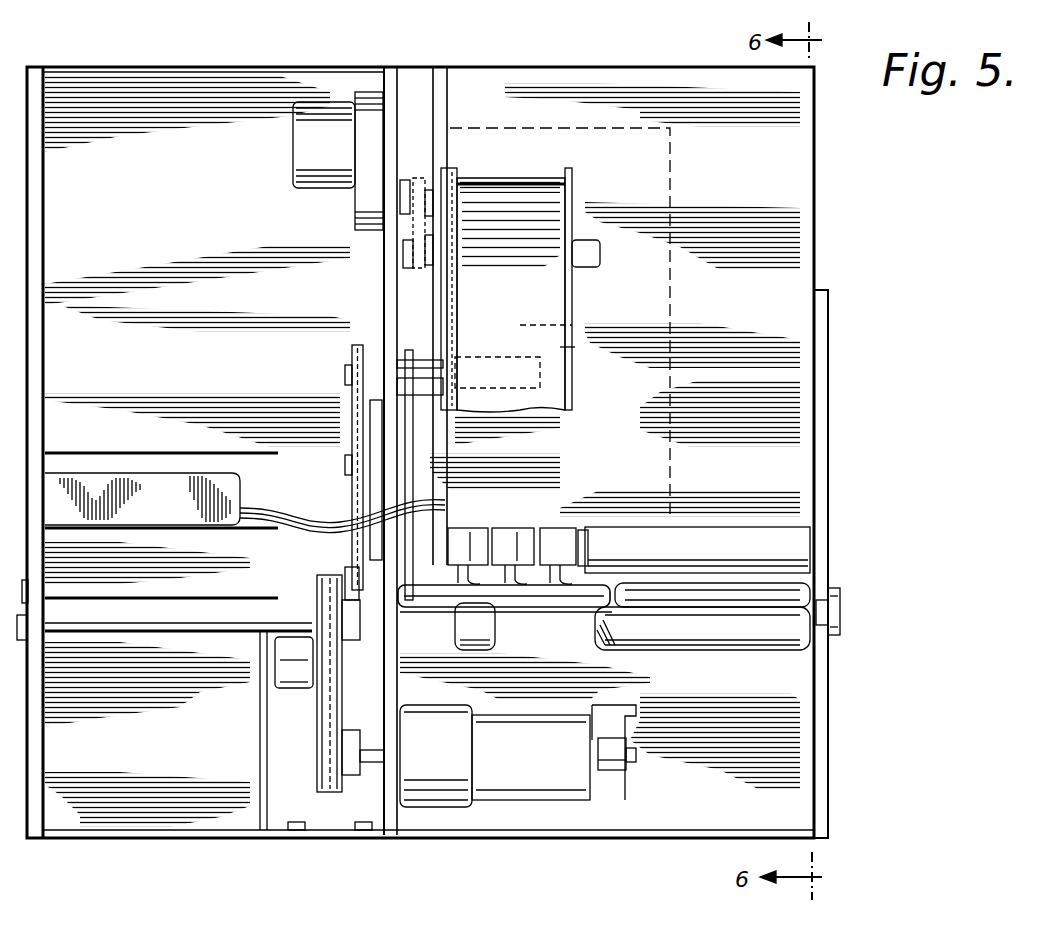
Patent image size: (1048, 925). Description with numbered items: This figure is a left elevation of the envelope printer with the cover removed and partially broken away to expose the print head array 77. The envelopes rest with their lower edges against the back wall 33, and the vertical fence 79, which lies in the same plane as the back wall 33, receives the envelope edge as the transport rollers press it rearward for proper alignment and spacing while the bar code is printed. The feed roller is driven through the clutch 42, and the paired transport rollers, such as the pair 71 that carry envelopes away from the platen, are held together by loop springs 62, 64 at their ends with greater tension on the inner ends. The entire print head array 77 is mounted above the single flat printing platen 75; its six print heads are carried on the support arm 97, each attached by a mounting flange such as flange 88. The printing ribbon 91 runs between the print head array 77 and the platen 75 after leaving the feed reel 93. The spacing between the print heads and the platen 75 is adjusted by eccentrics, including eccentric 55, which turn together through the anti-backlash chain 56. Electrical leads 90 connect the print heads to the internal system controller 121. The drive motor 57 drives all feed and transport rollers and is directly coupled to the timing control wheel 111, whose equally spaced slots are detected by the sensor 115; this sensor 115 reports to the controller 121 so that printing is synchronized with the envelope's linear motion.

The back wall 33 is at (443, 89).
The feed reel 93 is at (572, 298).
The eccentric 55 is at (572, 347).
The printing ribbon 91 is at (572, 410).
The anti-backlash chain 56 is at (345, 418).
The vertical fence 79 is at (447, 437).
The electrical leads 90 is at (325, 506).
The internal system controller 121 is at (193, 507).
The print head array 77 is at (540, 530).
The mounting flange 88 is at (545, 555).
The support arm 97 is at (590, 565).
The loop spring 62 is at (845, 612).
The clutch 42 is at (258, 657).
The loop spring 64 is at (375, 645).
The printing platen 75 is at (518, 615).
The transport rollers 71 is at (778, 637).
The sensor 115 is at (640, 720).
The timing control wheel 111 is at (622, 792).
The drive motor 57 is at (525, 778).